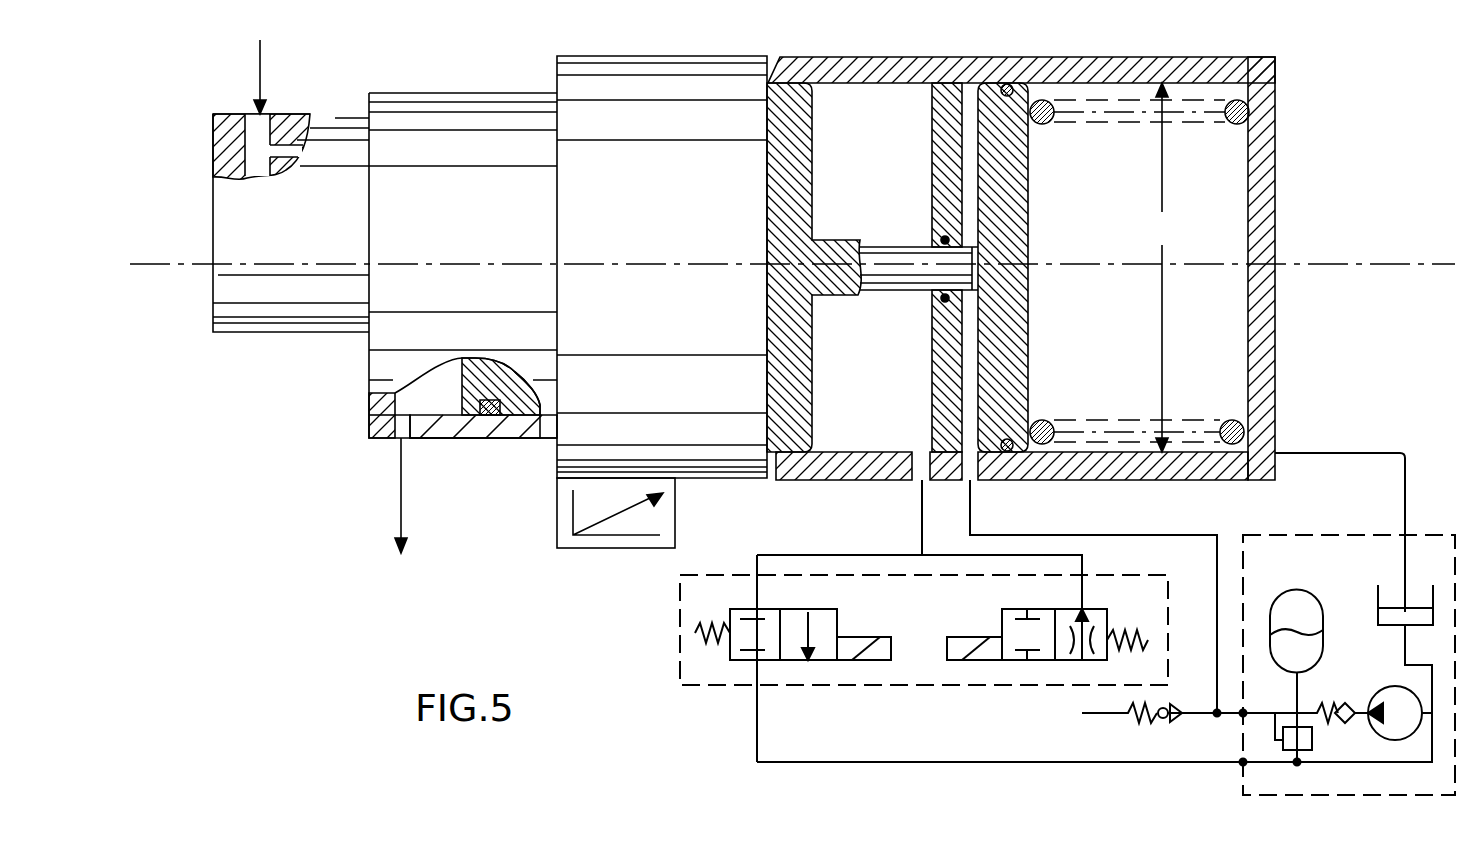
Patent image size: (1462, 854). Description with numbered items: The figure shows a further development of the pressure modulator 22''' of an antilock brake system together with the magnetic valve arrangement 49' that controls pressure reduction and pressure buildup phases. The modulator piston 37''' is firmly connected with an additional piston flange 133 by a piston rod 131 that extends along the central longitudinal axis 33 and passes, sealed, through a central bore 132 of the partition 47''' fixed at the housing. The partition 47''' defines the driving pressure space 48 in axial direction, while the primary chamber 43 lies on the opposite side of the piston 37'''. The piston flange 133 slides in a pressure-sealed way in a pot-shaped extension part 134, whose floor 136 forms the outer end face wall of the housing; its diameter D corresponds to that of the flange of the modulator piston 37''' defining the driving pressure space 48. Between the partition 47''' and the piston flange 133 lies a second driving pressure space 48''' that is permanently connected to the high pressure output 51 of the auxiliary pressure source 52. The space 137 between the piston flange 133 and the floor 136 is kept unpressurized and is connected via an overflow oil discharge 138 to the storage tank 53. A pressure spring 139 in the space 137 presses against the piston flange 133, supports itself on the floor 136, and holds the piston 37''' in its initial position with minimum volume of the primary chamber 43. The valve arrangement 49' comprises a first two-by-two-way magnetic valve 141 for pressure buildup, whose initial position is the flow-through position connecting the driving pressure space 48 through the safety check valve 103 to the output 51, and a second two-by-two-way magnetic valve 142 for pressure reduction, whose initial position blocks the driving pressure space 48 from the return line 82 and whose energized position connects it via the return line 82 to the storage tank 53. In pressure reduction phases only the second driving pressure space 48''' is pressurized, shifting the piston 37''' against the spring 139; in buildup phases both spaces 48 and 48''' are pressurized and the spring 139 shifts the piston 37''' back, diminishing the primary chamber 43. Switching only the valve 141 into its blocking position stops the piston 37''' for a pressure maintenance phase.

The pressure modulator 22''' is at (1055, 251).
The central longitudinal axis 33 is at (1333, 264).
The modulator piston 37''' is at (833, 267).
The primary chamber 43 is at (443, 395).
The partition 47''' is at (909, 267).
The driving pressure space 48 is at (872, 408).
The second driving pressure space 48''' is at (981, 133).
The valve arrangement 49' is at (924, 601).
The high pressure output 51 is at (1240, 718).
The auxiliary pressure source 52 is at (1348, 648).
The storage tank 53 is at (1420, 607).
The return line 82 is at (895, 762).
The safety check valve 103 is at (1160, 722).
The piston rod 131 is at (878, 247).
The central bore 132 is at (905, 297).
The piston flange 133 is at (1020, 183).
The extension part 134 is at (1118, 75).
The floor 136 is at (1267, 188).
The space 137 is at (1222, 366).
The overflow oil discharge 138 is at (1332, 452).
The pressure spring 139 is at (1108, 428).
The pressure buildup control valve 141 is at (1002, 625).
The pressure reduction control valve 142 is at (828, 627).